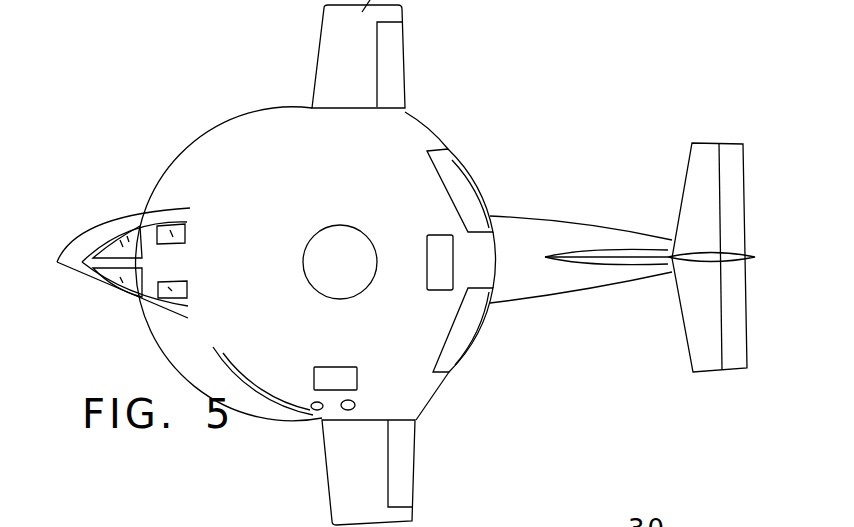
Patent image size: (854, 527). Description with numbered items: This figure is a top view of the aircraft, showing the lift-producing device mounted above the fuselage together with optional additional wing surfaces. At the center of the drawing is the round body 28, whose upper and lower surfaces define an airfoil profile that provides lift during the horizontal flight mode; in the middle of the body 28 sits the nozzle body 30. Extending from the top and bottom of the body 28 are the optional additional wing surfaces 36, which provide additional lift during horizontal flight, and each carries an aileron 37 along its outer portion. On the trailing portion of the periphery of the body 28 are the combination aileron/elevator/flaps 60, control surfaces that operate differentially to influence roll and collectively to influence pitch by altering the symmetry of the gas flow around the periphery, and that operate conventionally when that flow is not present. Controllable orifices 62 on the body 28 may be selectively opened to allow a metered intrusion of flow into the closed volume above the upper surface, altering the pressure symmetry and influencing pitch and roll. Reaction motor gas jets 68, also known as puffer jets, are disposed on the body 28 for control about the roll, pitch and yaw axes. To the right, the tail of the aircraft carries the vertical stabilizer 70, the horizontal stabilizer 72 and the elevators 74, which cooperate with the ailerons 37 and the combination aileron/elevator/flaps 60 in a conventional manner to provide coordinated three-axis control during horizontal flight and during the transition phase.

The body 28 is at (232, 167).
The nozzle body 30 is at (355, 225).
The additional wing surfaces 36 is at (368, 487).
The ailerons 37 is at (394, 70).
The combination aileron/elevator/flaps 60 is at (462, 182).
The controllable orifices 62 is at (440, 280).
The reaction motor gas jets 68 is at (346, 410).
The vertical stabilizer 70 is at (597, 270).
The horizontal stabilizer 72 is at (698, 198).
The elevator 74 is at (737, 184).